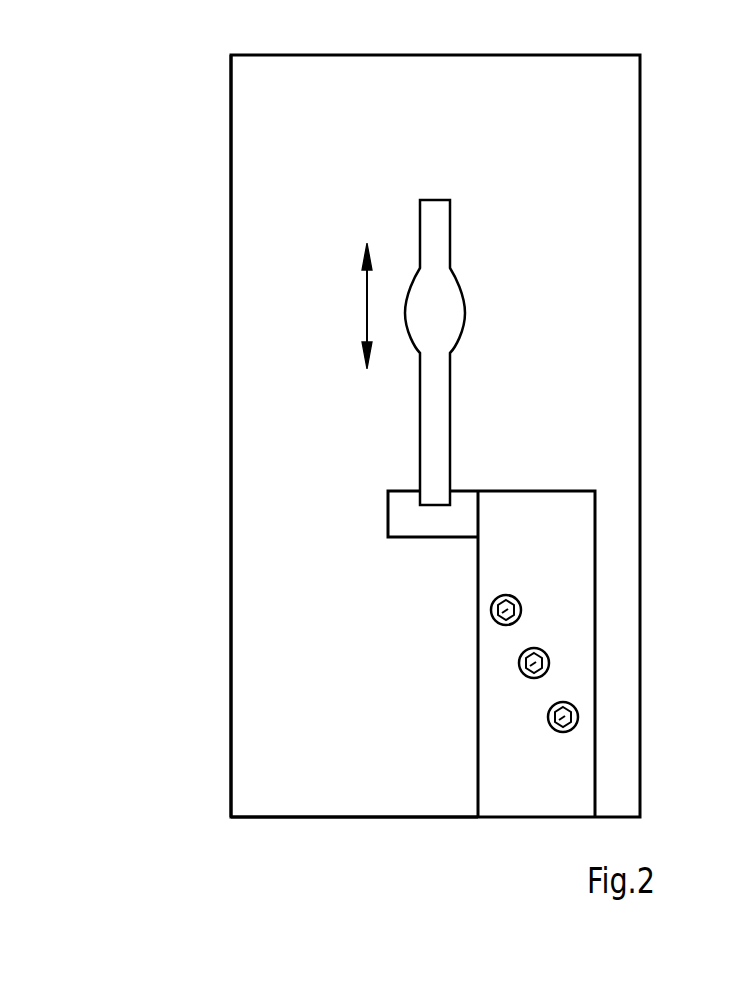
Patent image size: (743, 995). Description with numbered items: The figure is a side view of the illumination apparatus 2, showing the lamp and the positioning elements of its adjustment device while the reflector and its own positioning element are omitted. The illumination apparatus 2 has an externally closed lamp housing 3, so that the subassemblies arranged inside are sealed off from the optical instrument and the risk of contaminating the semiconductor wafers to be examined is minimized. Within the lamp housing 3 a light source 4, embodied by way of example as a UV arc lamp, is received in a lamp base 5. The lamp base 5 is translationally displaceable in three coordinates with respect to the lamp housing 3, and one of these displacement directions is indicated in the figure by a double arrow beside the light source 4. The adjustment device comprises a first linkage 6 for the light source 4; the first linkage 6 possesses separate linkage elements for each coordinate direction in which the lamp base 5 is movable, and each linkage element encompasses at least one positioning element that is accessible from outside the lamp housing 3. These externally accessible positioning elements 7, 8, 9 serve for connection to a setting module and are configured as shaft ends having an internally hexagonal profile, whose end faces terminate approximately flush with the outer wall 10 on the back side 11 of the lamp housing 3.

The illumination apparatus 2 is at (285, 315).
The lamp housing 3 is at (231, 408).
The light source 4 is at (447, 322).
The lamp base 5 is at (402, 523).
The first linkage 6 is at (524, 503).
The positioning element 7 is at (492, 613).
The positioning element 8 is at (522, 669).
The positioning element 9 is at (550, 723).
The outer wall 10 is at (230, 740).
The back side 11 is at (275, 672).